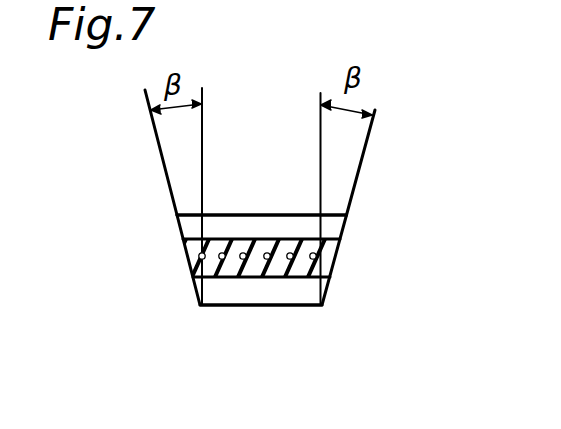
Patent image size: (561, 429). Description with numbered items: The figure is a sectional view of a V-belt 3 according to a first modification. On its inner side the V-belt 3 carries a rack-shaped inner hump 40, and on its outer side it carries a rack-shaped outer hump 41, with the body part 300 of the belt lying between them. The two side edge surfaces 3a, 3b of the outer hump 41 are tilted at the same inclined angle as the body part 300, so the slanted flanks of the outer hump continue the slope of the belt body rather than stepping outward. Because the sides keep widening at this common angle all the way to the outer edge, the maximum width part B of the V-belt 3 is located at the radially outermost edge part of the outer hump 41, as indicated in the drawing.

The V-belt 3 is at (238, 243).
The side edge surface of the outer hump 3a is at (187, 253).
The side edge surface of the outer hump 3b is at (333, 262).
The inner hump 40 is at (242, 290).
The outer hump 41 is at (287, 229).
The body part 300 is at (337, 250).
The maximum width part B is at (180, 215).